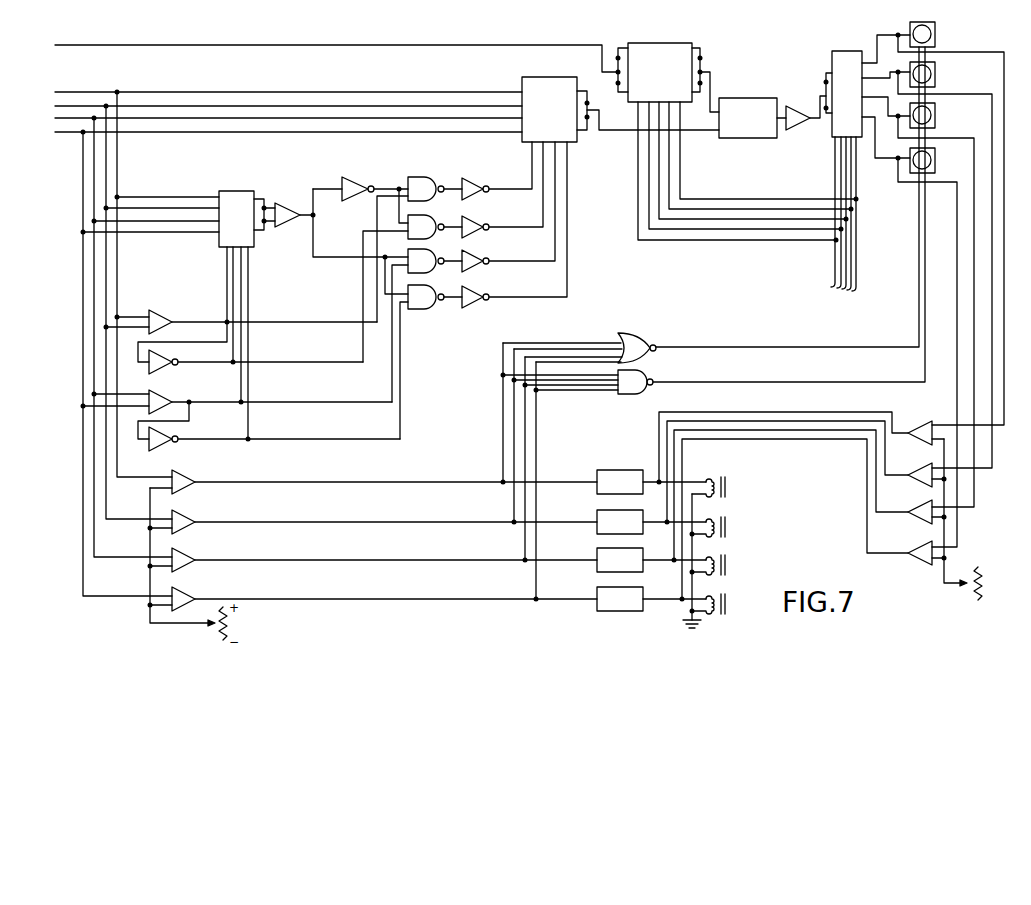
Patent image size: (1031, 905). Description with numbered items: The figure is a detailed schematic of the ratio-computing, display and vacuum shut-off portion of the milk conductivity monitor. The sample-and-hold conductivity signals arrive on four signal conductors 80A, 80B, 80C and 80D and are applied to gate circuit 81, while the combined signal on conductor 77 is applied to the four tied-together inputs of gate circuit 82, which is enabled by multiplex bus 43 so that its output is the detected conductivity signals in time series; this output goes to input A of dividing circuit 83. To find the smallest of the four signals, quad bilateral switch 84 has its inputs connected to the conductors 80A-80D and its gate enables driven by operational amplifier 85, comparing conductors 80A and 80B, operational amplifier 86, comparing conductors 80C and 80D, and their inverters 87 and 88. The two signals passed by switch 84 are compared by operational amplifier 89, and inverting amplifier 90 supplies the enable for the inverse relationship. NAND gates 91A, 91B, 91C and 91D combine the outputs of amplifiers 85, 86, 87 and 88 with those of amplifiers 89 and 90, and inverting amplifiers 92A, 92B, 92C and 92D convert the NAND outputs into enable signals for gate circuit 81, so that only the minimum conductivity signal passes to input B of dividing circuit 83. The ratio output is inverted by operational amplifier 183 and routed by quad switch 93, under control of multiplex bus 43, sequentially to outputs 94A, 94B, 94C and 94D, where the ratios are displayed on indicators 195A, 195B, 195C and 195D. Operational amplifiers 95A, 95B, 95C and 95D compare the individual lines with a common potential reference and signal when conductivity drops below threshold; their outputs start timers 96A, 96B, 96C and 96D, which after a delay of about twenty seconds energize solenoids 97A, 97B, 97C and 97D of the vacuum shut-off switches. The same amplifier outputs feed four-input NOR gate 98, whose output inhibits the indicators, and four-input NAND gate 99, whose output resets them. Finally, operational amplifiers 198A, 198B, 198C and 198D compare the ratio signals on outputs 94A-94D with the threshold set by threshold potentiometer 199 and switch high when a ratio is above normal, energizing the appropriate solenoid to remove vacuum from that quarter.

The conductor 77 is at (186, 42).
The signal conductor 80A is at (195, 89).
The signal conductor 80B is at (195, 105).
The signal conductor 80C is at (195, 118).
The signal conductor 80D is at (195, 132).
The gate circuit 81 is at (553, 72).
The gate circuit 82 is at (687, 37).
The dividing circuit 83 is at (771, 96).
The operational amplifier 183 is at (812, 106).
The quad bilateral switch 84 is at (245, 190).
The operational amplifier 85 is at (170, 317).
The operational amplifier 86 is at (174, 399).
The inverter 87 is at (168, 366).
The inverter 88 is at (166, 443).
The operational amplifier 89 is at (298, 206).
The inverting amplifier 90 is at (366, 178).
The NAND gate 91A is at (435, 178).
The NAND gate 91B is at (439, 218).
The NAND gate 91C is at (439, 253).
The NAND gate 91D is at (439, 289).
The inverting amplifier 92A is at (482, 176).
The inverting amplifier 92B is at (482, 216).
The inverting amplifier 92C is at (482, 252).
The inverting amplifier 92D is at (482, 288).
The quad switch 93 is at (844, 46).
The output 94A is at (883, 32).
The output 94B is at (874, 74).
The output 94C is at (857, 96).
The output 94D is at (884, 160).
The indicator 195A is at (936, 40).
The indicator 195B is at (936, 80).
The indicator 195C is at (936, 121).
The indicator 195D is at (936, 166).
The multiplex bus 43 is at (835, 258).
The operational amplifier 95A is at (186, 478).
The operational amplifier 95B is at (186, 518).
The operational amplifier 95C is at (186, 556).
The operational amplifier 95D is at (186, 595).
The timer 96A is at (616, 472).
The timer 96B is at (598, 513).
The timer 96C is at (598, 551).
The timer 96D is at (598, 590).
The solenoid 97A is at (725, 487).
The solenoid 97B is at (725, 527).
The solenoid 97C is at (725, 565).
The solenoid 97D is at (725, 604).
The NOR gate 98 is at (652, 345).
The NAND gate 99 is at (648, 380).
The operational amplifier 198A is at (923, 424).
The operational amplifier 198B is at (920, 471).
The operational amplifier 198C is at (913, 511).
The operational amplifier 198D is at (908, 552).
The threshold potentiometer 199 is at (990, 573).